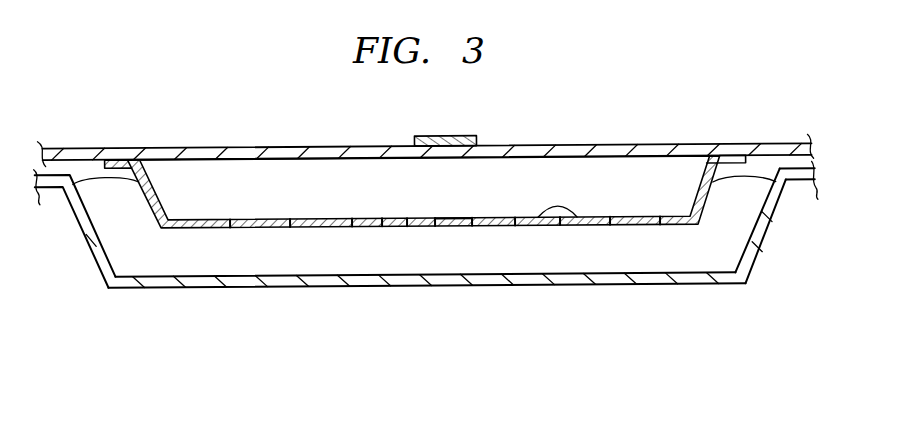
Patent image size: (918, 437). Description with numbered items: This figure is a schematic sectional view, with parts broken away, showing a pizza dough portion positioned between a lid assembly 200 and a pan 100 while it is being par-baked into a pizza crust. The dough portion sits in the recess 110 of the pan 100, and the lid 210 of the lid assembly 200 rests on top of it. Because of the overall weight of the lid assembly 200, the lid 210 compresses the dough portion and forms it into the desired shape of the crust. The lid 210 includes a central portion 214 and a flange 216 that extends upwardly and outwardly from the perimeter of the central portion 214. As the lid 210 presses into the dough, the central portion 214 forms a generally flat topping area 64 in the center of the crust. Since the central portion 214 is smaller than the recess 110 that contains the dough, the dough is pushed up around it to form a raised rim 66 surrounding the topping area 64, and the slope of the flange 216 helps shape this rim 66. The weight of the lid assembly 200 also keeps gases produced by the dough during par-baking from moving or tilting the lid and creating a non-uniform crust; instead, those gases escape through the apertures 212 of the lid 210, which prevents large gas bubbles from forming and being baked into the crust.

The lid assembly 200 is at (366, 140).
The flange 216 is at (153, 168).
The raised rim 66 is at (766, 174).
The lid 210 is at (439, 165).
The apertures 212 is at (321, 217).
The central portion 214 is at (452, 217).
The pan 100 is at (426, 252).
The recess 110 is at (147, 288).
The topping area 64 is at (577, 218).